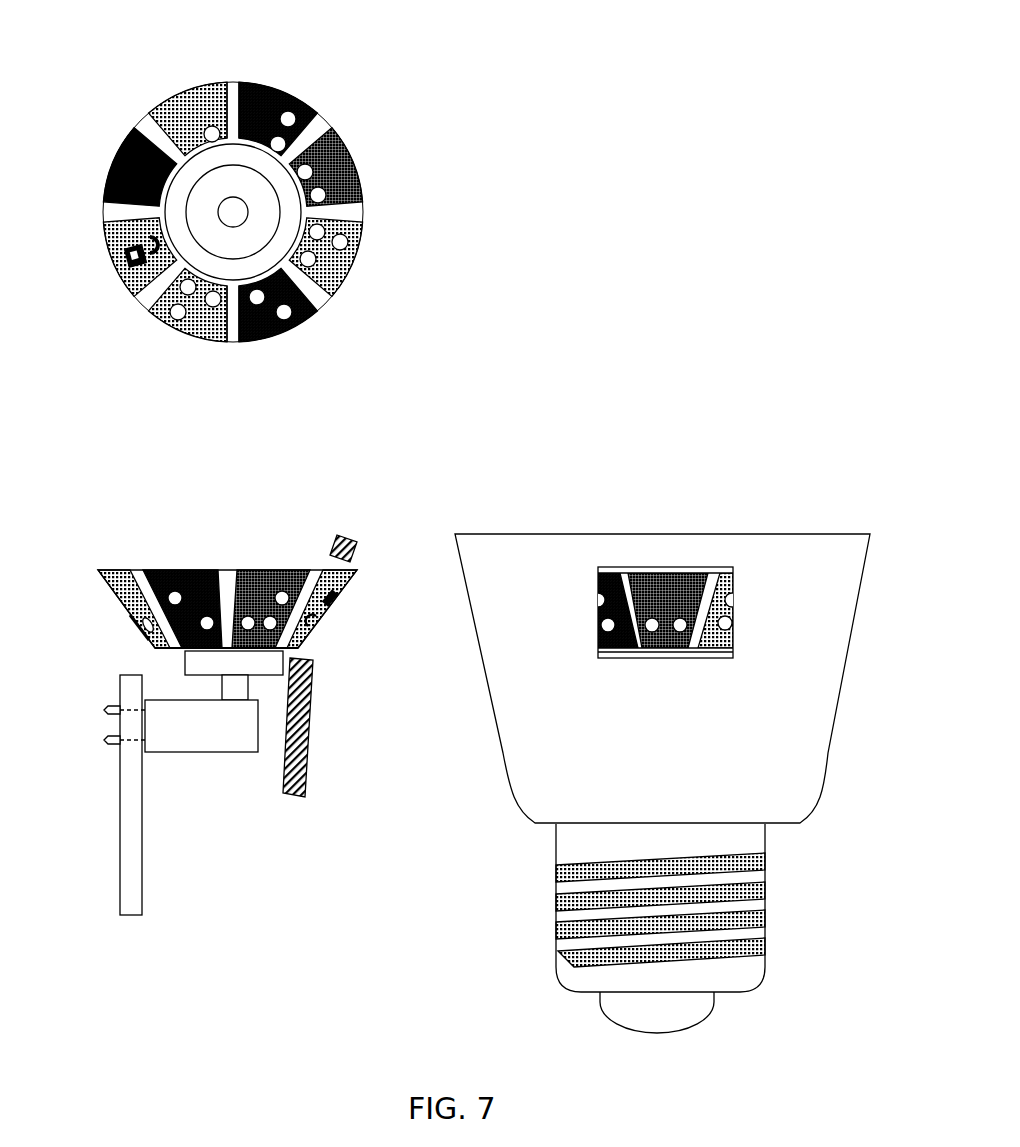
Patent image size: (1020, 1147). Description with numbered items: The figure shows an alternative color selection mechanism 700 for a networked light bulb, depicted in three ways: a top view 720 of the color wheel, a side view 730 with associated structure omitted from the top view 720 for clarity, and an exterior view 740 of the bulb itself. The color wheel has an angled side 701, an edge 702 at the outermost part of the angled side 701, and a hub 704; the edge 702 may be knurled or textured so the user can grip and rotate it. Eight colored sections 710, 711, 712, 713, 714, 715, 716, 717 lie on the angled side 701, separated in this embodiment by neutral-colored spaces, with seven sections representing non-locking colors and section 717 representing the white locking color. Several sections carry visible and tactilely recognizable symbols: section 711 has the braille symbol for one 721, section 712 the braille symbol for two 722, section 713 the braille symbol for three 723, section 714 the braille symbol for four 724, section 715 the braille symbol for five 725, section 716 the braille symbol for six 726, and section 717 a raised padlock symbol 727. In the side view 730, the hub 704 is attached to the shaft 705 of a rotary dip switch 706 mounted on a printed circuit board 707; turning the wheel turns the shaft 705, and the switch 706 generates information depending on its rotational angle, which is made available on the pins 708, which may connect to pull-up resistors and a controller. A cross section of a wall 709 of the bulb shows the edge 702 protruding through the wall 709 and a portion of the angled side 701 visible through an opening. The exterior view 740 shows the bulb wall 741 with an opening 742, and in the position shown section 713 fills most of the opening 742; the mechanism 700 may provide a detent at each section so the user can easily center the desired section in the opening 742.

The color selection mechanism 700 is at (652, 153).
The angled side 701 is at (90, 596).
The edge 702 is at (322, 300).
The hub 704 is at (185, 663).
The shaft 705 is at (222, 686).
The rotary dip switch 706 is at (193, 753).
The printed circuit board 707 is at (143, 853).
The pins 708 is at (104, 713).
The wall 709 is at (357, 540).
The colored section 710 is at (108, 177).
The colored section 711 is at (178, 133).
The colored section 712 is at (250, 110).
The colored section 713 is at (347, 175).
The colored section 714 is at (330, 283).
The colored section 715 is at (252, 340).
The colored section 716 is at (210, 330).
The colored section 717 is at (133, 280).
The top view 720 is at (349, 94).
The braille symbol for one 721 is at (208, 127).
The braille symbol for two 722 is at (296, 99).
The braille symbol for three 723 is at (478, 339).
The braille symbol for four 724 is at (365, 265).
The braille symbol for five 725 is at (297, 325).
The braille symbol for six 726 is at (168, 338).
The raised padlock symbol 727 is at (111, 280).
The side view 730 is at (128, 511).
The exterior view 740 is at (720, 406).
The wall 741 is at (805, 782).
The opening 742 is at (610, 567).